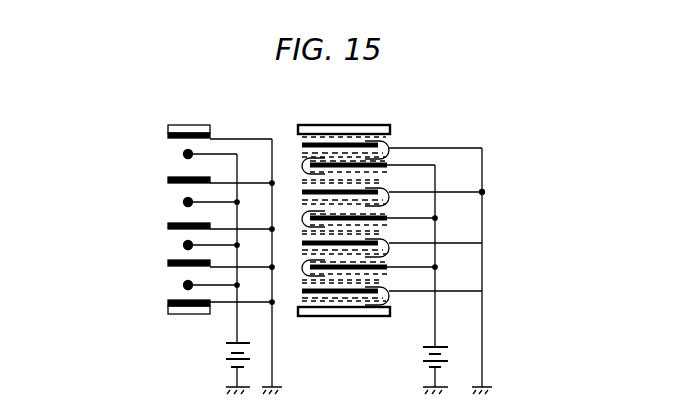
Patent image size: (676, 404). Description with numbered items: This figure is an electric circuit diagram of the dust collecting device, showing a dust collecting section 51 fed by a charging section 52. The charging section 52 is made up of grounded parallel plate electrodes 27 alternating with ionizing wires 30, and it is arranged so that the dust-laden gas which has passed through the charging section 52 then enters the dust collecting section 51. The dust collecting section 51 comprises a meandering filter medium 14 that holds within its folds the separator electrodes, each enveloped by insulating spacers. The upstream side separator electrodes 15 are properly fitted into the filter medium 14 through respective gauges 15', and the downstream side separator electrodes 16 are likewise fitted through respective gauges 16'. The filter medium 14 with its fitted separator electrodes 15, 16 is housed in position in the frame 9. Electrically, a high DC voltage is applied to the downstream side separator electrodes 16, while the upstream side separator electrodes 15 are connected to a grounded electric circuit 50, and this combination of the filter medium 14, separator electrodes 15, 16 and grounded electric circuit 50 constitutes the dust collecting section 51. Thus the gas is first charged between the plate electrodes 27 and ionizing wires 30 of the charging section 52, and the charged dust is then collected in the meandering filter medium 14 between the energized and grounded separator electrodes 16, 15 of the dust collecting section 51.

The frame 9 is at (360, 125).
The filter medium 14 is at (390, 191).
The upstream side separator electrodes 15 is at (324, 226).
The gauges 15' is at (340, 226).
The downstream side separator electrodes 16 is at (344, 226).
The gauges 16' is at (372, 240).
The grounded parallel plate electrodes 27 is at (168, 134).
The ionizing wires 30 is at (184, 154).
The grounded electric circuit 50 is at (488, 188).
The dust collecting section 51 is at (384, 118).
The charging section 52 is at (195, 124).